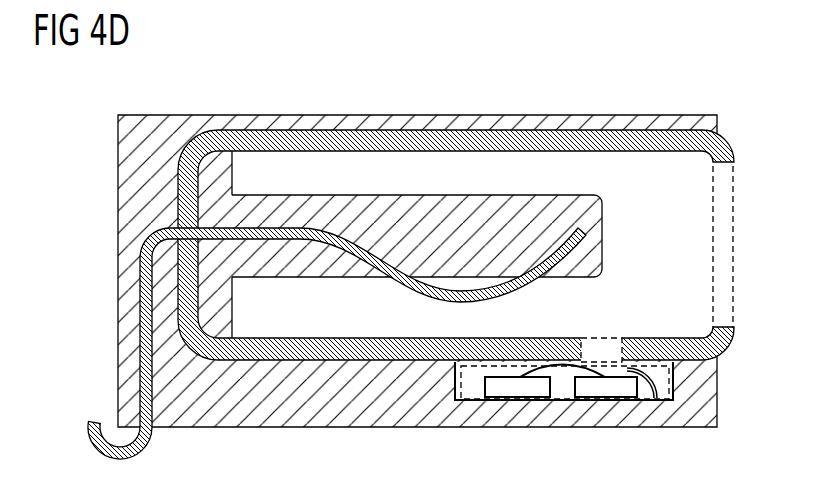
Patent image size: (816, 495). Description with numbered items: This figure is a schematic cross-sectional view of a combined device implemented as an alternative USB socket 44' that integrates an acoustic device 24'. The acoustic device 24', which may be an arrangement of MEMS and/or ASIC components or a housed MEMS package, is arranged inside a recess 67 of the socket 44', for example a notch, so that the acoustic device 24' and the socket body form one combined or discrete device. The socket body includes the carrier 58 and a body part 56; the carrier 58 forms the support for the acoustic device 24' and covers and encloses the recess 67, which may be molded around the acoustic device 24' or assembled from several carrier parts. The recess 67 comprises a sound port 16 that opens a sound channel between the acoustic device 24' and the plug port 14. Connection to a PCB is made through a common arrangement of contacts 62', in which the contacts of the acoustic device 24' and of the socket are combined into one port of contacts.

The USB socket 44' is at (411, 269).
The carrier 58 is at (173, 128).
The socket body part 56 is at (612, 146).
The plug port 14 is at (728, 228).
The common arrangement of contacts 62' is at (333, 343).
The sound port 16 is at (598, 340).
The acoustic device 24' is at (608, 392).
The recess 67 is at (473, 398).